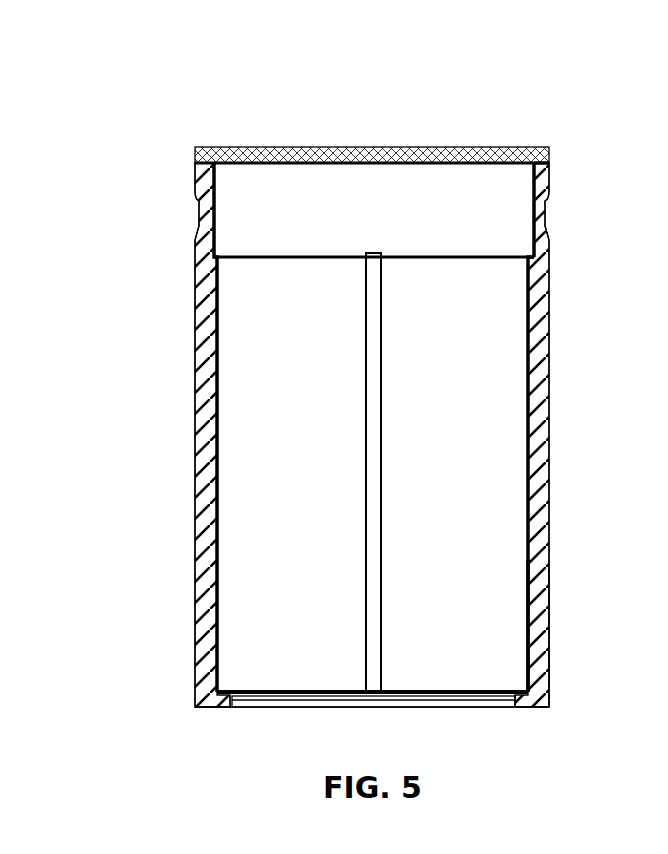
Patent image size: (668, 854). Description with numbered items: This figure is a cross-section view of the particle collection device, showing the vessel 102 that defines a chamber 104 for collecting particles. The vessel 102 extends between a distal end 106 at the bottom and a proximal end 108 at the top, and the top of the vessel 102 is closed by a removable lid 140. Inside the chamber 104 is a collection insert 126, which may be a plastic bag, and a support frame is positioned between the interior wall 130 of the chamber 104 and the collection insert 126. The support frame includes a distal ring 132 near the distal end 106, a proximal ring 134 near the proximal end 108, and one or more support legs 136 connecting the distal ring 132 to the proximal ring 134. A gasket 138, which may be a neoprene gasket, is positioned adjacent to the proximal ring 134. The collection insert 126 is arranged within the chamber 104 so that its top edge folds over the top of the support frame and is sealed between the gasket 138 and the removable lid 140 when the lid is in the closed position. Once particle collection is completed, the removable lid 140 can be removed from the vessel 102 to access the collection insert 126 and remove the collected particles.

The vessel 102 is at (196, 385).
The chamber 104 is at (243, 478).
The distal end 106 is at (222, 708).
The proximal end 108 is at (366, 430).
The collection insert 126 is at (551, 362).
The interior wall 130 is at (539, 643).
The distal ring 132 is at (467, 700).
The proximal ring 134 is at (552, 162).
The support leg 136 is at (373, 592).
The gasket 138 is at (500, 193).
The removable lid 140 is at (453, 153).